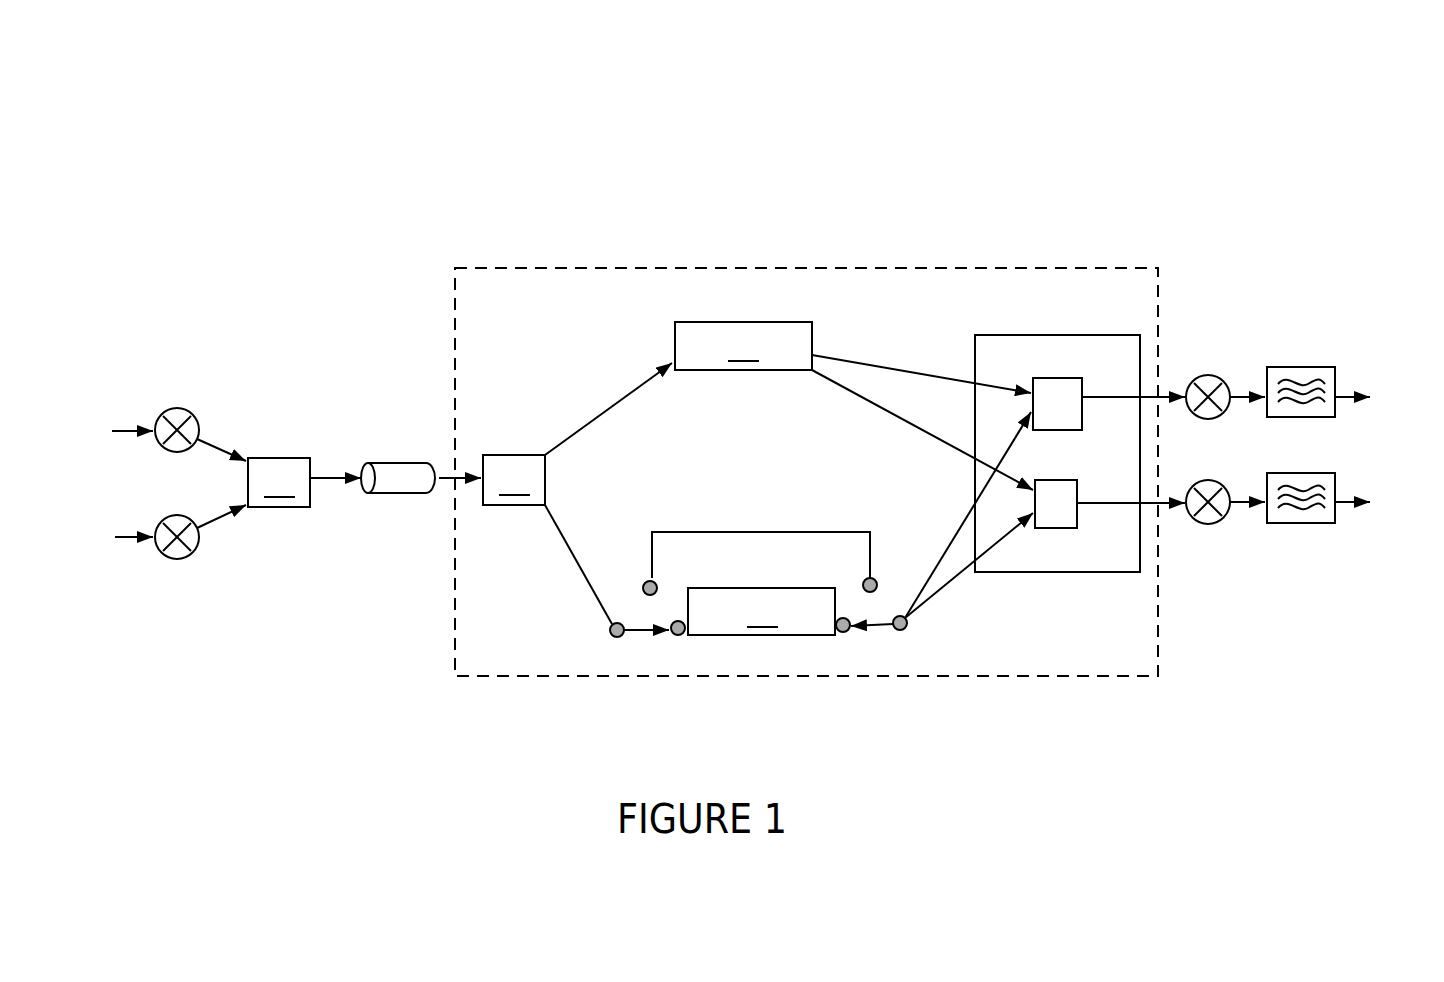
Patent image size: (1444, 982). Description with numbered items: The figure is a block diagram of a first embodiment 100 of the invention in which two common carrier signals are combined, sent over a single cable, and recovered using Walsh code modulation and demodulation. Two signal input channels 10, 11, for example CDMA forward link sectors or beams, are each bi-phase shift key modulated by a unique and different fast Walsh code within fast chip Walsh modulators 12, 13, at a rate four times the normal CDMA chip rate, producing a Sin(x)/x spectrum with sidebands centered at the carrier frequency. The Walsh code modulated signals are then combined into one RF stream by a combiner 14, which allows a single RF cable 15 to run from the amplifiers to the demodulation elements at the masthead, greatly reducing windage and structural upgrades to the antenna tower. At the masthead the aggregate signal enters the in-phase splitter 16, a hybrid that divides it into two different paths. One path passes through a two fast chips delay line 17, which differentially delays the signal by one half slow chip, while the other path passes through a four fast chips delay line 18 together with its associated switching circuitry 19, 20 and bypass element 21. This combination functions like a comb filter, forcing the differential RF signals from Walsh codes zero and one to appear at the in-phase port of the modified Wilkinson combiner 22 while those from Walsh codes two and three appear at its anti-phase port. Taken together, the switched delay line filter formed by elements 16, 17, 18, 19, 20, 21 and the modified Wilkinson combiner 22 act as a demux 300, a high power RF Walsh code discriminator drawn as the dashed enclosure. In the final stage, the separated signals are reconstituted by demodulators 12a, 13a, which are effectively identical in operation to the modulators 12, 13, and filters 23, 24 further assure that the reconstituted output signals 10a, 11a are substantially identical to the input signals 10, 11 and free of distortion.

The first embodiment 100 is at (388, 190).
The demux 300 is at (808, 268).
The signal input channel 10 is at (95, 451).
The signal input channel 11 is at (98, 552).
The fast chip Walsh modulator 12 is at (178, 407).
The fast chip Walsh modulator 13 is at (178, 560).
The combiner 14 is at (253, 483).
The RF cable 15 is at (398, 462).
The in-phase splitter 16 is at (555, 493).
The two fast chips delay line 17 is at (854, 406).
The four fast chips delay line 18 is at (762, 611).
The switching circuitry 19 is at (623, 641).
The switching circuitry 20 is at (901, 641).
The switched delay line filter element 21 is at (757, 530).
The modified Wilkinson combiner 22 is at (1050, 335).
The demodulator 12a is at (1210, 372).
The demodulator 13a is at (1208, 525).
The filter 23 is at (1302, 366).
The filter 24 is at (1302, 524).
The reconstituted output signal 10a is at (1421, 410).
The reconstituted output signal 11a is at (1421, 516).